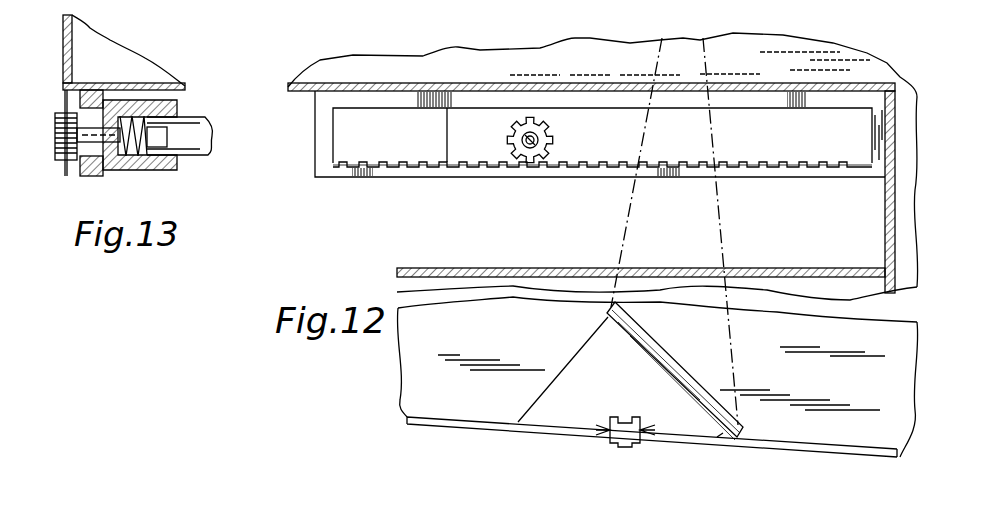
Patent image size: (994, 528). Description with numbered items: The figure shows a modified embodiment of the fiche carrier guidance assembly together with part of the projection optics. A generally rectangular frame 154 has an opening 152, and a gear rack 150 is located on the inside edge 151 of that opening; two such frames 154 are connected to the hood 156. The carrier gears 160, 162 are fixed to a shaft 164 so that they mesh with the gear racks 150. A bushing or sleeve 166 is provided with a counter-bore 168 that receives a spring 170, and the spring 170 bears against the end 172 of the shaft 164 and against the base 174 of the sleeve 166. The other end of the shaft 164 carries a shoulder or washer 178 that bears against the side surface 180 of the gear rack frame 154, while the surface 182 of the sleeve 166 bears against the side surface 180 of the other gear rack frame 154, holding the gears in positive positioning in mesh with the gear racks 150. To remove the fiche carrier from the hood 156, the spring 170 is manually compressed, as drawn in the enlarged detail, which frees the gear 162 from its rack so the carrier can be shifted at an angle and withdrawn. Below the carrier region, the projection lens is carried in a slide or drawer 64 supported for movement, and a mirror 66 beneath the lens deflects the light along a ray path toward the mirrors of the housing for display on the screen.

In FIG. 12, the slide or drawer 64 is at (468, 404).
In FIG. 12, the mirror 66 is at (677, 368).
In FIG. 12, the gear rack 150 is at (423, 158).
In FIG. 12, the inside edge 151 is at (385, 164).
In FIG. 12, the opening 152 is at (335, 130).
In FIG. 12, the frame 154 is at (322, 153).
In FIG. 12, the hood 156 is at (730, 91).
In FIG. 13, the gear 160 is at (57, 113).
In FIG. 12, the gear 162 is at (555, 140).
In FIG. 13, the shaft 164 is at (192, 137).
In FIG. 12, the shaft 164 is at (523, 155).
In FIG. 13, the bushing or sleeve 166 is at (163, 100).
In FIG. 13, the counter-bore 168 is at (187, 119).
In FIG. 13, the spring 170 is at (137, 113).
In FIG. 13, the end of the shaft 172 is at (148, 171).
In FIG. 13, the base of the sleeve 174 is at (107, 107).
In FIG. 12, the shoulder or washer 178 is at (543, 118).
In FIG. 13, the side surface 180 is at (78, 160).
In FIG. 13, the surface of the sleeve 182 is at (107, 152).